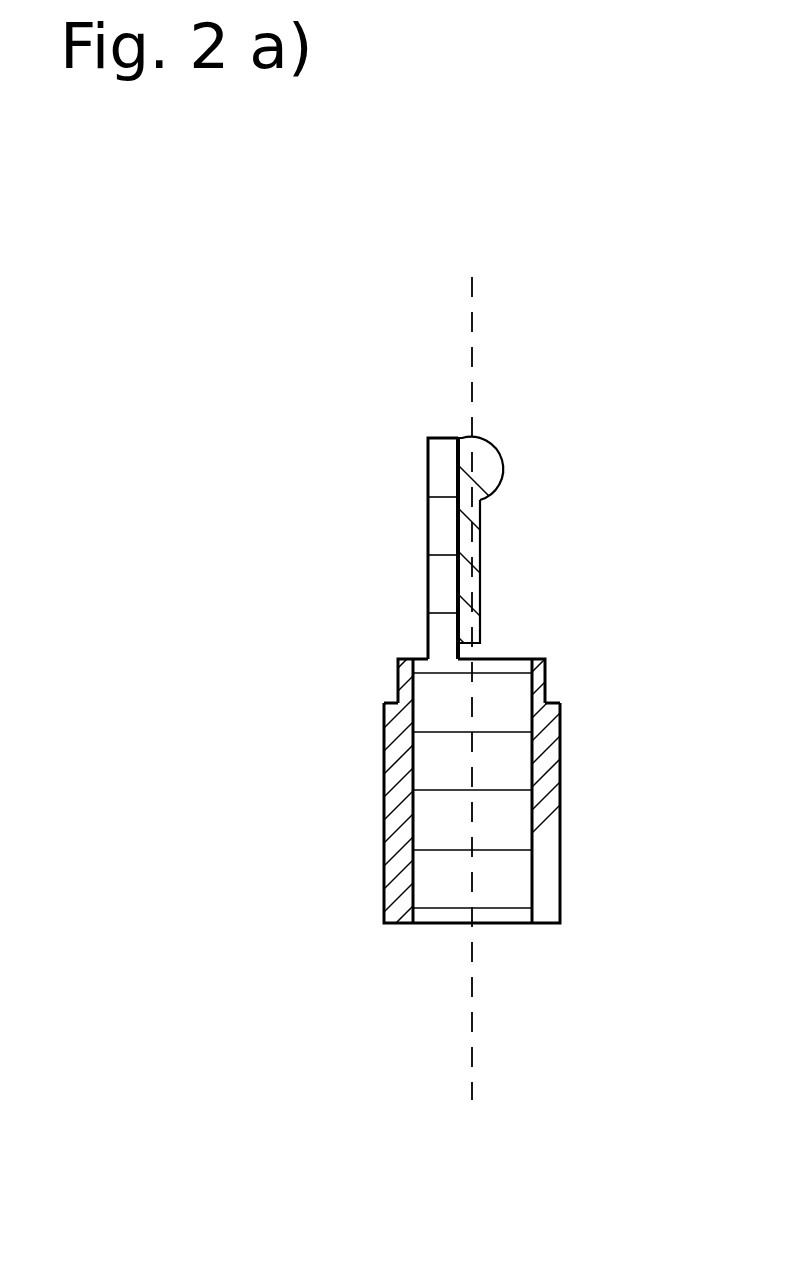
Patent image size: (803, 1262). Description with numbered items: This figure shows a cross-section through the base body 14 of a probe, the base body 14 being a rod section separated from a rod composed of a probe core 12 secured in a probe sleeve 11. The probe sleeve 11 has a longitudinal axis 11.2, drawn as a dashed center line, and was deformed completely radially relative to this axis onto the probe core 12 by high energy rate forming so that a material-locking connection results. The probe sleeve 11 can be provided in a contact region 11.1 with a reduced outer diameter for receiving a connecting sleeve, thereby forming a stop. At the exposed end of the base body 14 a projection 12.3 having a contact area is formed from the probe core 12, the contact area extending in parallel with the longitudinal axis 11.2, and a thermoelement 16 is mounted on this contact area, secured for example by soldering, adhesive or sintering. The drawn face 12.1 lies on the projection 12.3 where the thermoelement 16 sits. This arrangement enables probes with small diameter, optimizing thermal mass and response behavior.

The probe sleeve 11 is at (401, 631).
The contact region 11.1 is at (385, 688).
The longitudinal axis 11.2 is at (472, 362).
The probe core 12 is at (454, 682).
The contact surface 12.1 is at (460, 468).
The projection 12.3 is at (413, 570).
The base body 14 is at (355, 893).
The thermoelement 16 is at (502, 453).